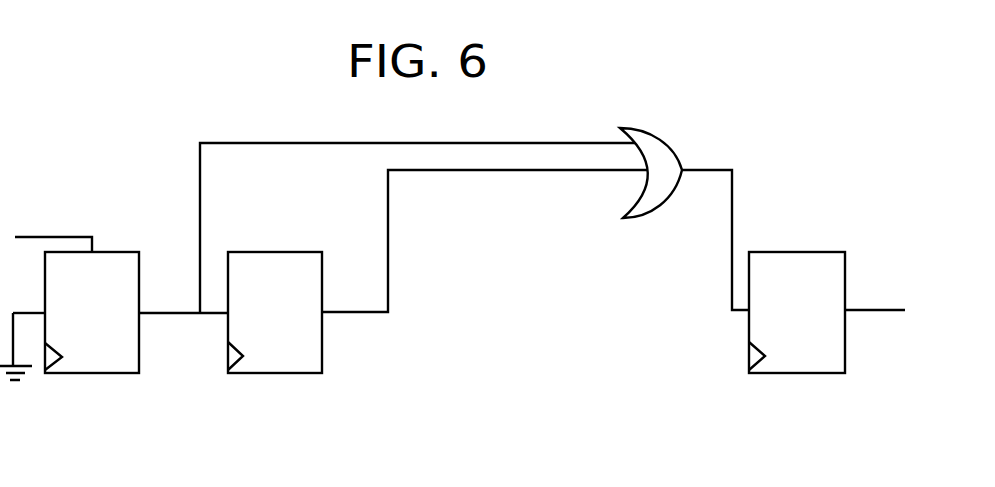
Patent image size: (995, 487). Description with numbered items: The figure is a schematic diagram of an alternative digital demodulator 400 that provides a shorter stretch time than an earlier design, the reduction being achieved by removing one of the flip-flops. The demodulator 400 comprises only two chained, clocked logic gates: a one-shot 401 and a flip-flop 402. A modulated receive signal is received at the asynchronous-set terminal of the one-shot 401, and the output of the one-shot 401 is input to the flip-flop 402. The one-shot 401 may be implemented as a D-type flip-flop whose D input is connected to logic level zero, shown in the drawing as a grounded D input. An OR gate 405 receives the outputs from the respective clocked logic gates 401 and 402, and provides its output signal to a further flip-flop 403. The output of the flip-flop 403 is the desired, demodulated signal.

The alternative digital demodulator 400 is at (222, 103).
The one-shot 401 is at (75, 373).
The flip-flop 402 is at (283, 373).
The flip-flop 403 is at (793, 373).
The OR gate 405 is at (668, 207).